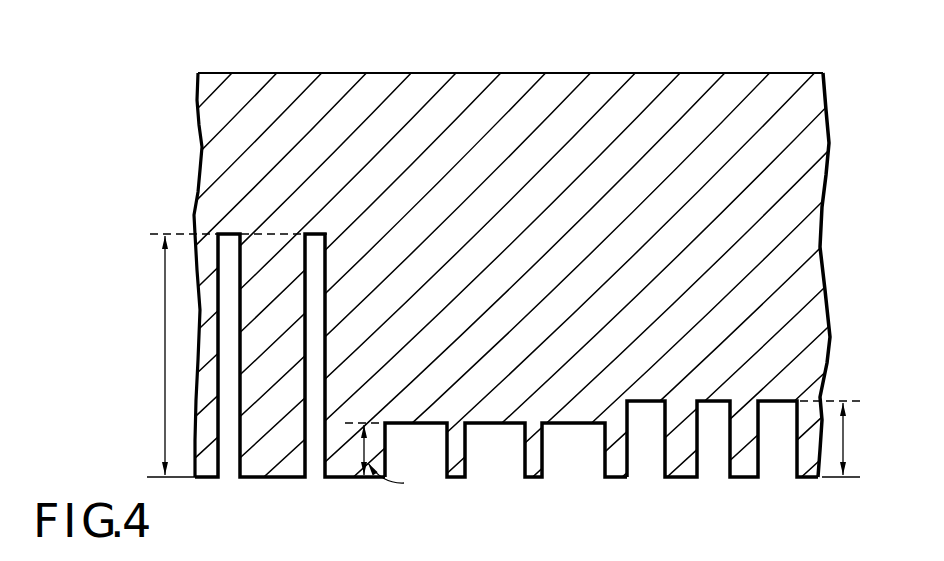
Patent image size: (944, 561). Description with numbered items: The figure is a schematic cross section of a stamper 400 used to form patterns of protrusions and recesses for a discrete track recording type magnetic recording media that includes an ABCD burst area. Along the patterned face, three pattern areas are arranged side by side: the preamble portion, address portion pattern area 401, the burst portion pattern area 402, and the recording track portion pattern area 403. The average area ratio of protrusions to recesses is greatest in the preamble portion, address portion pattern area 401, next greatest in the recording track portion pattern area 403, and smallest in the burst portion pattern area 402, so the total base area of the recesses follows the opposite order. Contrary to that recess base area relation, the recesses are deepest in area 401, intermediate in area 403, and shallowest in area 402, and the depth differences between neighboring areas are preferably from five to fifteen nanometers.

The stamper 400 is at (721, 64).
The preamble portion, address portion pattern area 401 is at (350, 504).
The burst portion pattern area 402 is at (616, 504).
The recording track portion pattern area 403 is at (811, 504).